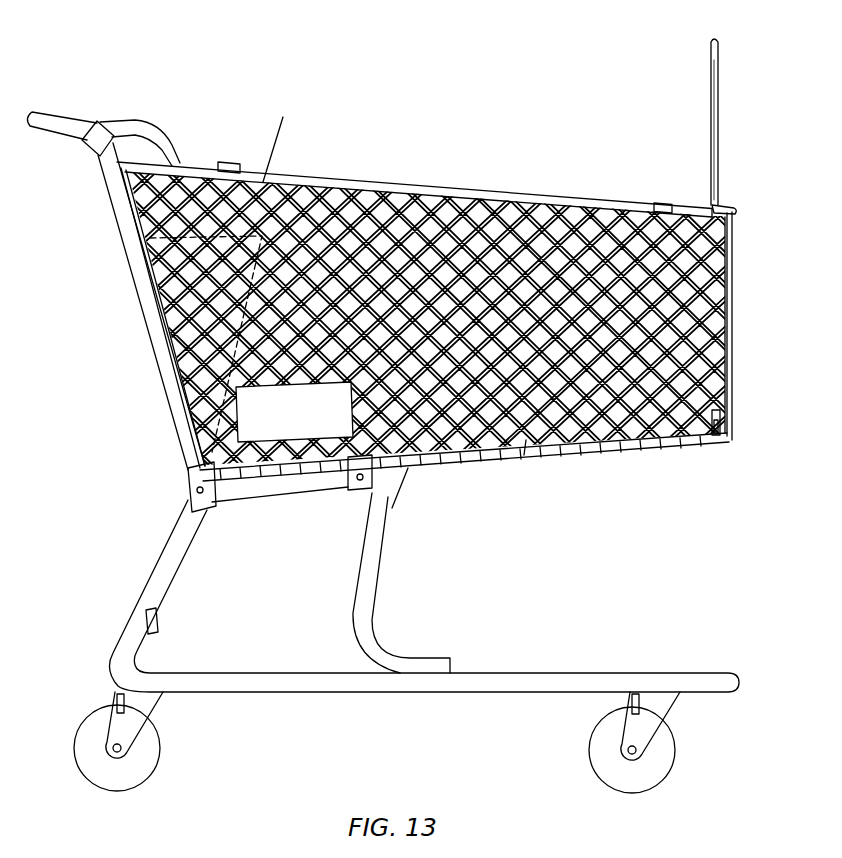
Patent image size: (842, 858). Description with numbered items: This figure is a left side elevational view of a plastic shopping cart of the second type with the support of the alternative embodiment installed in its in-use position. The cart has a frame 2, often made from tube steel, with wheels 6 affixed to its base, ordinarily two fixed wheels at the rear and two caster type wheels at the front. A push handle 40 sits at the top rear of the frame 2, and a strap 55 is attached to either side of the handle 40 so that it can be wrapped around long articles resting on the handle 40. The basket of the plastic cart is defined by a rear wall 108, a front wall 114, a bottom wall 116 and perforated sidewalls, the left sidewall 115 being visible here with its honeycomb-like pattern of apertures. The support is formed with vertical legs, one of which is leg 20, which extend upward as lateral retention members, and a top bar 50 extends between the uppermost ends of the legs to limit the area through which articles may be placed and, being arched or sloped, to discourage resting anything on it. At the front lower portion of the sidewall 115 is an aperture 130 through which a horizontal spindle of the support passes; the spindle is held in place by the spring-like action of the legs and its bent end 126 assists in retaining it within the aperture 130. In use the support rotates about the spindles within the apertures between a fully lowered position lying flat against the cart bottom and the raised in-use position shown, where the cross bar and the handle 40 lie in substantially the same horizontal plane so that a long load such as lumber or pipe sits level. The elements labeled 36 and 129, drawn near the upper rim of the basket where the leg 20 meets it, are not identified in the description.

The frame 2 is at (538, 676).
The wheels 6 is at (162, 752).
The vertical leg 20 is at (722, 140).
The post mounting cap 36 is at (737, 206).
The push handle 40 is at (44, 112).
The top bar 50 is at (722, 42).
The strap 55 is at (150, 125).
The rear wall 108 is at (133, 372).
The front wall 114 is at (744, 316).
The left sidewall 115 is at (530, 444).
The bottom wall 116 is at (460, 474).
The bent end 126 is at (736, 433).
The top rail hinge clip 129 is at (664, 200).
The aperture 130 is at (712, 440).